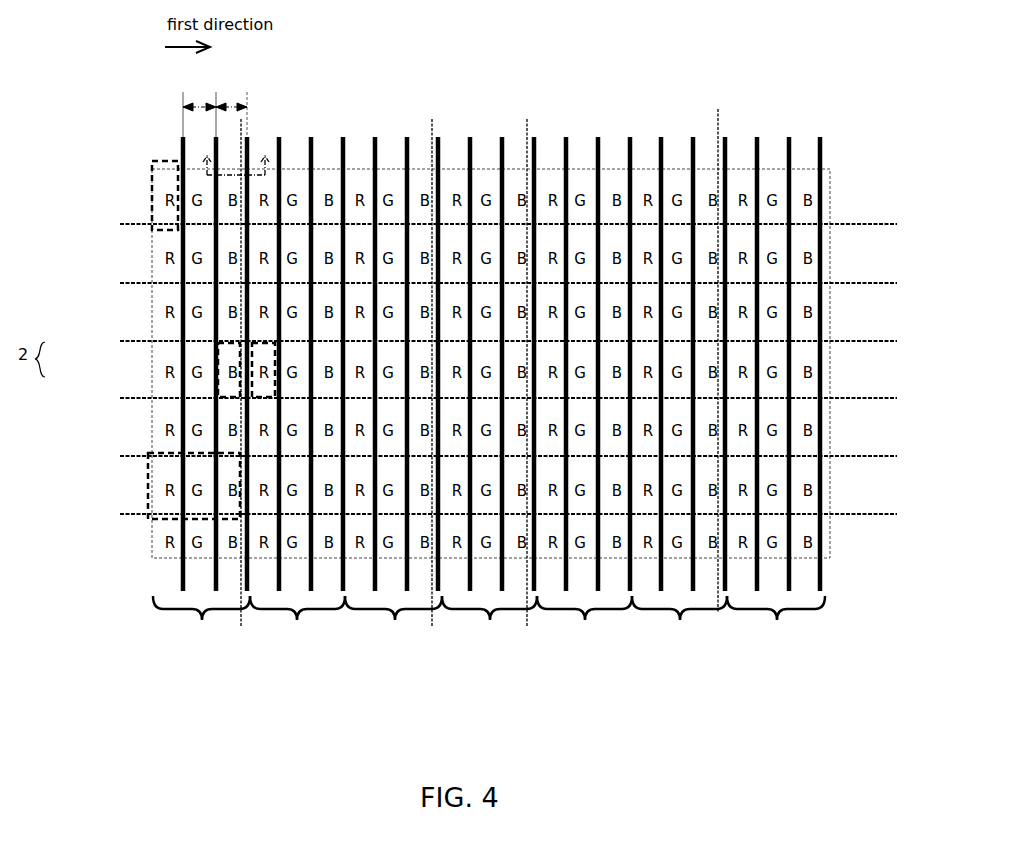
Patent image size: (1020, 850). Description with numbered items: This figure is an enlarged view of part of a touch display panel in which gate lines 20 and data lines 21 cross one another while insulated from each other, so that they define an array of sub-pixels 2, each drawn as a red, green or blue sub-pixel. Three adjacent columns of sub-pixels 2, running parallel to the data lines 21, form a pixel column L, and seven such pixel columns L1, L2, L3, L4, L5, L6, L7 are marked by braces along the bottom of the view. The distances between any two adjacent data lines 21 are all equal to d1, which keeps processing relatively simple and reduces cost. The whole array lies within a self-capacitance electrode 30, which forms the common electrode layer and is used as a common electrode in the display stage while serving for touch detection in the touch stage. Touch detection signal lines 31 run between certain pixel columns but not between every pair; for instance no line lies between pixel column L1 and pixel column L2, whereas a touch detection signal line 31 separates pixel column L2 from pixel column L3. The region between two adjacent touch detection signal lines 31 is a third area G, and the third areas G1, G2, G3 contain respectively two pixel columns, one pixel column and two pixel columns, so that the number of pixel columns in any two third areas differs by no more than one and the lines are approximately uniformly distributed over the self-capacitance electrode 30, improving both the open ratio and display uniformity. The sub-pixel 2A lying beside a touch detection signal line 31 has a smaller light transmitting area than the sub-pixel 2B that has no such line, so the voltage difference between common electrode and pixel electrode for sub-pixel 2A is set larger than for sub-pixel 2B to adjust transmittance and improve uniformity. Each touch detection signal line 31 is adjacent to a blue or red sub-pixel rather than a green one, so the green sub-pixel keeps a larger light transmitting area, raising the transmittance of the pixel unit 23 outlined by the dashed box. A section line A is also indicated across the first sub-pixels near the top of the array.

The sub-pixel 2 is at (150, 197).
The sub-pixel provided with touch detection signal line 2A is at (218, 372).
The sub-pixel without touch detection signal line 2B is at (252, 393).
The gate line 20 is at (120, 224).
The data line 21 is at (180, 151).
The pixel unit 23 is at (147, 483).
The self-capacitance electrode 30 is at (832, 188).
The touch detection signal line 31 is at (432, 118).
The third area G is at (479, 317).
The third area G1 is at (302, 364).
The third area G2 is at (504, 364).
The third area G3 is at (665, 357).
The pixel column L is at (172, 628).
The pixel column L1 is at (201, 619).
The pixel column L2 is at (297, 619).
The pixel column L3 is at (393, 619).
The fourth data line set L4 is at (489, 619).
The fifth data line set L5 is at (584, 619).
The sixth data line set L6 is at (679, 619).
The seventh data line set L7 is at (776, 619).
The distance between adjacent data lines d1 is at (215, 106).
The section line A-A' A is at (237, 156).